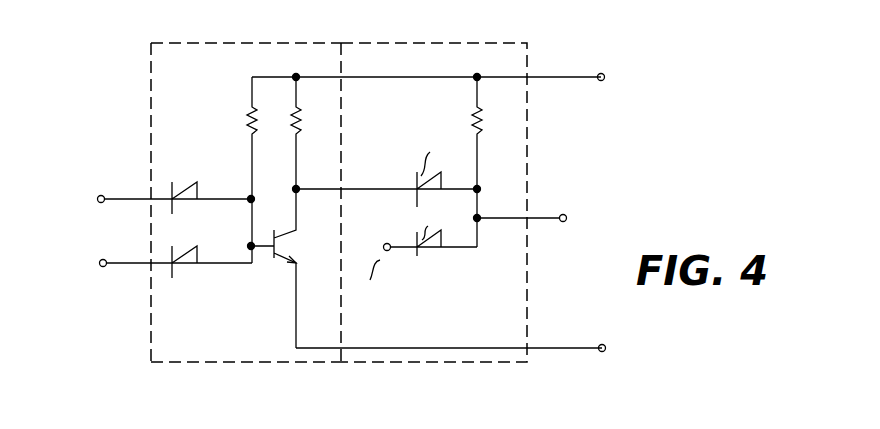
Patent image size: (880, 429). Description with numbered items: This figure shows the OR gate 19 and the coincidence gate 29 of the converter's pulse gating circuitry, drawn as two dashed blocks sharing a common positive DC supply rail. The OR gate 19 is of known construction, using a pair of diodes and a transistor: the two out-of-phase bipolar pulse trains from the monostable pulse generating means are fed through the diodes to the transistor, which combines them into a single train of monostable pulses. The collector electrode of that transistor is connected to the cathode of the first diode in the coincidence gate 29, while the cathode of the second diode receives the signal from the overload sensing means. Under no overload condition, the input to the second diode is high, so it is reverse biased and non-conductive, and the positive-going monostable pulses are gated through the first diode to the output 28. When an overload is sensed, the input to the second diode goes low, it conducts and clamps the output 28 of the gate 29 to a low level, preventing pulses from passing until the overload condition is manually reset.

The OR gate 19 is at (252, 43).
The coincidence gate 29 is at (410, 43).
The output 28 is at (565, 213).